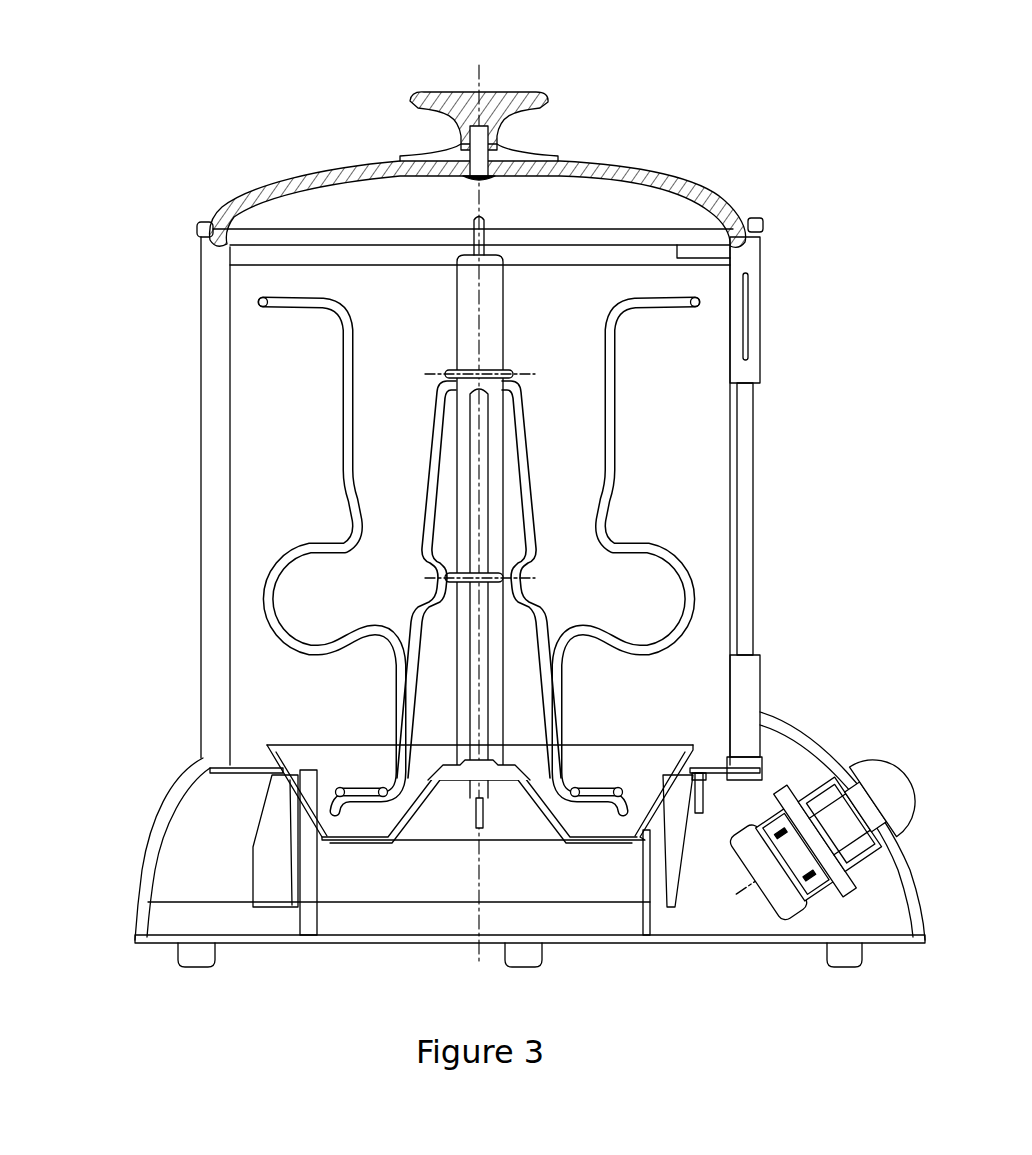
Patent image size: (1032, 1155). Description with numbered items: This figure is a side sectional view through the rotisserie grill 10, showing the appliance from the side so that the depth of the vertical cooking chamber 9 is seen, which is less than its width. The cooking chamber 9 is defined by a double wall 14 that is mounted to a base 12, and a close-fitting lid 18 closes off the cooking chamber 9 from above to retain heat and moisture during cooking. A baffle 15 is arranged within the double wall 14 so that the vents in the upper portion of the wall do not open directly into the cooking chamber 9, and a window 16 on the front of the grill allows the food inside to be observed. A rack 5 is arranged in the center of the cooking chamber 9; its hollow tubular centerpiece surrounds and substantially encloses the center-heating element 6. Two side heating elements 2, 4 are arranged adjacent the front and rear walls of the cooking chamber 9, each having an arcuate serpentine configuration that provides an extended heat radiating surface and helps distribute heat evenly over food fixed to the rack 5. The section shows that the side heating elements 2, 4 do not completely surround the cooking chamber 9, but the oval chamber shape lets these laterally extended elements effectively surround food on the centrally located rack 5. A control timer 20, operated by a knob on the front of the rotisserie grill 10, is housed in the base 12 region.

The rotisserie grill 10 is at (186, 166).
The lid 18 is at (325, 168).
The double wall 14 is at (201, 473).
The cooking chamber 9 is at (680, 520).
The baffle 15 is at (748, 315).
The window 16 is at (753, 450).
The side heating element 4 is at (347, 403).
The side heating element 2 is at (692, 580).
The rack 5 is at (498, 357).
The center-heating element 6 is at (490, 800).
The base 12 is at (163, 807).
The control timer 20 is at (840, 757).